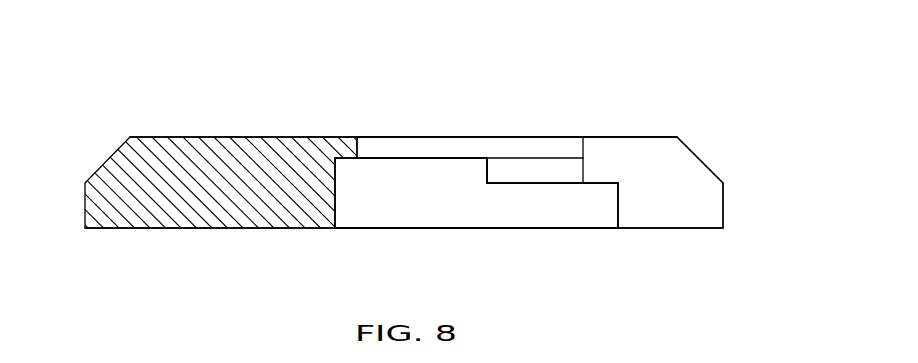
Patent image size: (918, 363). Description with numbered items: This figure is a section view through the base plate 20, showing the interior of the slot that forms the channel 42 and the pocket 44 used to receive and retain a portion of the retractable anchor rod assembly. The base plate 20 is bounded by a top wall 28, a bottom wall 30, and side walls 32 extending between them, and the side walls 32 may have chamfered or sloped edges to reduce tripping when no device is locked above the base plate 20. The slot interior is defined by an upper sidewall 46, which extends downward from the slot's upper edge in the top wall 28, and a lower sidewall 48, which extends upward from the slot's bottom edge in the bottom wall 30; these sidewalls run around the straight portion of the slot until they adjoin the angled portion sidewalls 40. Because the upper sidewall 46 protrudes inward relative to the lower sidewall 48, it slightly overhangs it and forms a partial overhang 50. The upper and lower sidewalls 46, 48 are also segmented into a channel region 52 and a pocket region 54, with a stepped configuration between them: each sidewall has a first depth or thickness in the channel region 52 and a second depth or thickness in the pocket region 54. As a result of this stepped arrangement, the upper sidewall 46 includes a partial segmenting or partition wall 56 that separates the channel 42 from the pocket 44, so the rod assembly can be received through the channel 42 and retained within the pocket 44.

The base plate 20 is at (361, 128).
The top wall 28 is at (252, 137).
The bottom wall 30 is at (165, 228).
The side walls 32 is at (723, 185).
The angled portion sidewalls 40 is at (662, 206).
The channel 42 is at (552, 219).
The pocket 44 is at (476, 224).
The upper sidewall 46 is at (510, 171).
The lower sidewall 48 is at (419, 196).
The partial overhang 50 is at (348, 160).
The channel region 52 is at (560, 137).
The pocket region 54 is at (422, 137).
The partition wall 56 is at (486, 176).